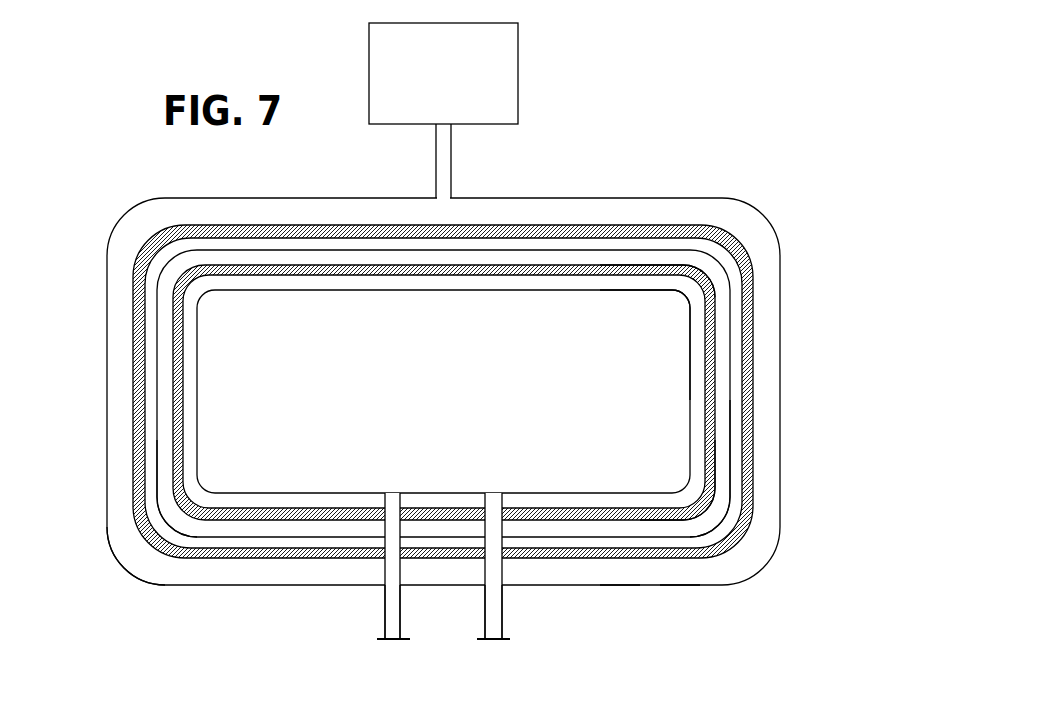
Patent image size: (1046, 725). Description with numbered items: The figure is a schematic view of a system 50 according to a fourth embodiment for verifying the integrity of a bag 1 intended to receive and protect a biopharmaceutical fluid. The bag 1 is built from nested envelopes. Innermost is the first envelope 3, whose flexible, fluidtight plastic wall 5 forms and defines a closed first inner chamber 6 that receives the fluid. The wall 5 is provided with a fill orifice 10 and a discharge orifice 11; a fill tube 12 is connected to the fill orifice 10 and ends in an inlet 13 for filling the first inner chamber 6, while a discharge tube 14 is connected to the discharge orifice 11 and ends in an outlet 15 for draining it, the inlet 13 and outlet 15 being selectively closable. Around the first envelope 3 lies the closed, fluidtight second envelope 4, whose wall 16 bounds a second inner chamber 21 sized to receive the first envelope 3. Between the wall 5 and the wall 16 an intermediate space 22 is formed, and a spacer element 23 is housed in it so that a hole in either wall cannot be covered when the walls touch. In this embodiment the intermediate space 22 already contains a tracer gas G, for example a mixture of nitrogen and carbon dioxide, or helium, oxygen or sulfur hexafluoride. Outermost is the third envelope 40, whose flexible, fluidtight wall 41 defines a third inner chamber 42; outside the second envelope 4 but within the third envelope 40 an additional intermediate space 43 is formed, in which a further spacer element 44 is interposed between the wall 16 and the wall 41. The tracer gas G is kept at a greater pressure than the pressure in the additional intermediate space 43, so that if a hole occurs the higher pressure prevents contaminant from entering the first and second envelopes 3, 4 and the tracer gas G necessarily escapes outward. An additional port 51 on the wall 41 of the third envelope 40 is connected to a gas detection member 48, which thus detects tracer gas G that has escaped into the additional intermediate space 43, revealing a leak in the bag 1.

The bag 1 is at (651, 166).
The first envelope 3 is at (691, 358).
The second envelope 4 is at (732, 382).
The wall 5 is at (692, 331).
The first inner chamber 6 is at (649, 323).
The fill orifice 10 is at (392, 490).
The discharge orifice 11 is at (494, 490).
The fill tube 12 is at (392, 597).
The inlet 13 is at (393, 641).
The discharge tube 14 is at (497, 597).
The outlet 15 is at (497, 641).
The wall 16 is at (733, 462).
The second inner chamber 21 is at (704, 524).
The intermediate space 22 is at (288, 506).
The spacer element 23 is at (673, 266).
The third envelope 40 is at (182, 586).
The wall 41 is at (138, 578).
The third inner chamber 42 is at (618, 572).
The additional intermediate space 43 is at (675, 572).
The spacer element 44 is at (235, 556).
The gas detection member 48 is at (498, 45).
The system 50 is at (680, 65).
The additional port 51 is at (443, 175).
The tracer gas G is at (165, 482).